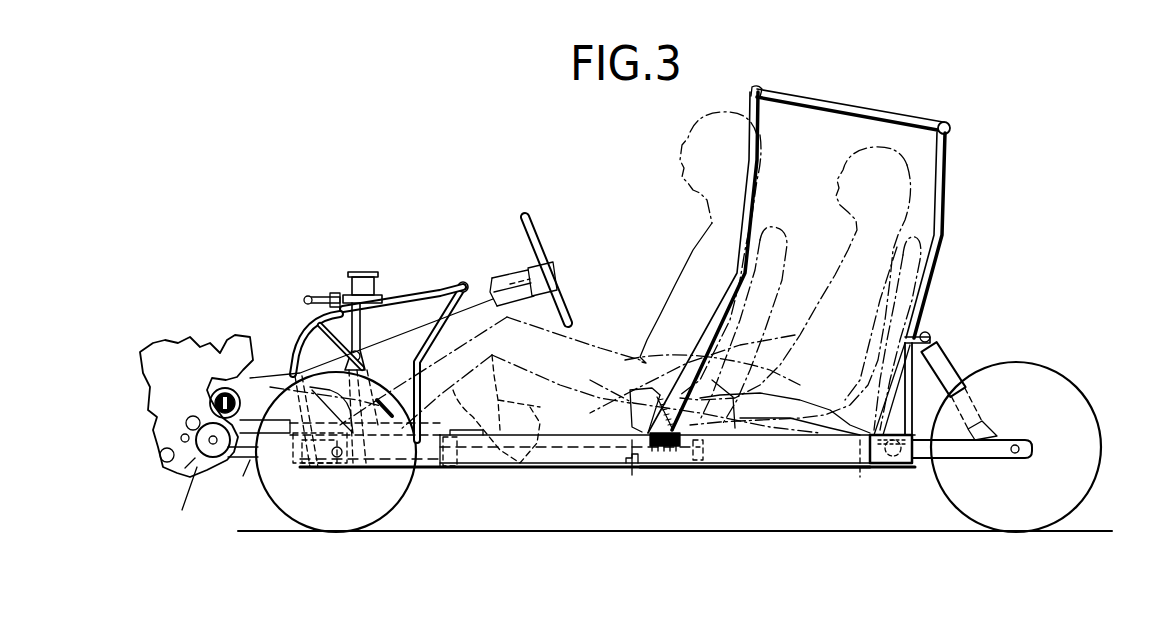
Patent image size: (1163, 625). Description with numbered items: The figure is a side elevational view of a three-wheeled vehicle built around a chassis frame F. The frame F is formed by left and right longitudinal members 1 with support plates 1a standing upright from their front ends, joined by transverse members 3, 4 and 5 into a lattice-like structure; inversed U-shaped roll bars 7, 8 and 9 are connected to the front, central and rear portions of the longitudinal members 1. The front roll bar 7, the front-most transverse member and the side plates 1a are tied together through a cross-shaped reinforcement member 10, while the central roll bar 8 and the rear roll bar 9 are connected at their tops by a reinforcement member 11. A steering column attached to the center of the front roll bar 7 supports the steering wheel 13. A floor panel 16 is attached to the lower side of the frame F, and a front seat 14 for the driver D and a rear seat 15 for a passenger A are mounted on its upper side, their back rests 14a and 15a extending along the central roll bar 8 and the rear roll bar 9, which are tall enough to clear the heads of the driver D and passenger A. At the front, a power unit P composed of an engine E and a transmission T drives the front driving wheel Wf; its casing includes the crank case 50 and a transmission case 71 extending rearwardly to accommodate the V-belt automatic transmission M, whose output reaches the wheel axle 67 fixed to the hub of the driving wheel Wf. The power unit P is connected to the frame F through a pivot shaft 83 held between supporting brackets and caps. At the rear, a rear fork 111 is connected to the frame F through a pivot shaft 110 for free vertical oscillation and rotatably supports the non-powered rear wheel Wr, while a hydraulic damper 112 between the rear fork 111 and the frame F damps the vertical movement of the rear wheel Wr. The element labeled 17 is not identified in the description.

The longitudinal member 1 is at (562, 465).
The support plate 1a is at (254, 380).
The transverse member 3 is at (448, 468).
The transverse member 4 is at (700, 467).
The transverse member 5 is at (861, 473).
The front roll bar 7 is at (463, 282).
The central roll bar 8 is at (750, 160).
The rear roll bar 9 is at (940, 209).
The cross-shaped reinforcement member 10 is at (410, 305).
The reinforcement member 11 is at (842, 108).
The steering wheel 13 is at (528, 221).
The front seat 14 is at (572, 385).
The back rest 14a is at (758, 326).
The rear seat 15 is at (804, 412).
The back rest 15a is at (900, 300).
The floor panel 16 is at (629, 473).
The foot rest 17 is at (496, 409).
The crank case 50 is at (190, 463).
The wheel axle 67 is at (340, 468).
The transmission case 71 is at (236, 483).
The pivot shaft 83 is at (211, 405).
The pivot shaft 110 is at (893, 465).
The rear fork 111 is at (958, 455).
The hydraulic damper 112 is at (933, 346).
The power unit P is at (150, 348).
The engine E is at (153, 433).
The automatic transmission M is at (200, 468).
The transmission T is at (186, 502).
The driving wheel Wf is at (390, 507).
The non-powered wheel Wr is at (1088, 483).
The driver D is at (697, 122).
The passenger A is at (848, 153).
The frame F is at (747, 470).